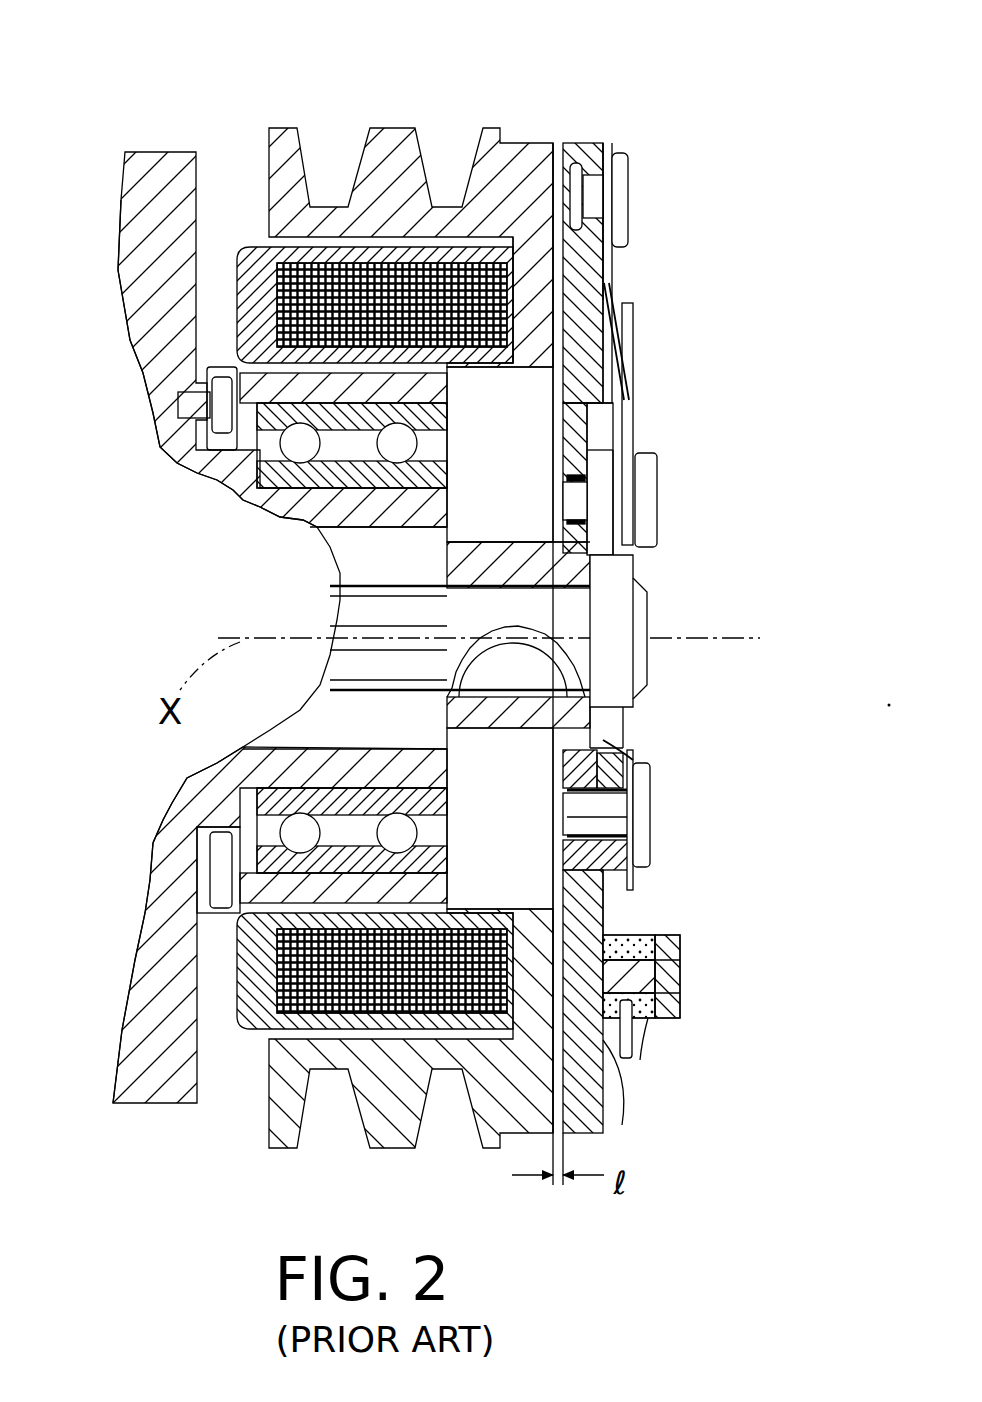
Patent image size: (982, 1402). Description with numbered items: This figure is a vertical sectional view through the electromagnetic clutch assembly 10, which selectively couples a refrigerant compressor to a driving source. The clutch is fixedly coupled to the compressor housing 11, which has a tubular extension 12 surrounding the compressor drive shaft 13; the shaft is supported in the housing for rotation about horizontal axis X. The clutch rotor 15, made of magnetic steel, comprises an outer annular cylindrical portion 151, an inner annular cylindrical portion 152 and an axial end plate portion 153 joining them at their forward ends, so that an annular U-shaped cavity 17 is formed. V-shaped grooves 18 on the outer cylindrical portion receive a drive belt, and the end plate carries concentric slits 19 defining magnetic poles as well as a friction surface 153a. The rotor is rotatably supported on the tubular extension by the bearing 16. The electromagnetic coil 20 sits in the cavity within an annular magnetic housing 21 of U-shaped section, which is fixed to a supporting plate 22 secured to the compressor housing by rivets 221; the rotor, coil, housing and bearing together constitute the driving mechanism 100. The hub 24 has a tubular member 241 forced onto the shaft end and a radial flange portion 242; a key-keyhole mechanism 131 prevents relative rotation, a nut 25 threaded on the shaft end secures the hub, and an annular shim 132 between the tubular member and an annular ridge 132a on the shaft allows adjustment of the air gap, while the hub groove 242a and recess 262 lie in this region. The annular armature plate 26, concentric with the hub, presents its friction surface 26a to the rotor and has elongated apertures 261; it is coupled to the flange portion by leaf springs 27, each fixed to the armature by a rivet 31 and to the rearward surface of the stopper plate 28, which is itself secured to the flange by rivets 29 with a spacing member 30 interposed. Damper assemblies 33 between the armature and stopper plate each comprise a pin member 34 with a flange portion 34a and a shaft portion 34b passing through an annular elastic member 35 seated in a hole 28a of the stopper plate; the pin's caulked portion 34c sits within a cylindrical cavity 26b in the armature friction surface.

The driving mechanism 100 is at (280, 92).
The electromagnetic clutch assembly 10 is at (385, 78).
The compressor housing 11 is at (168, 150).
The tubular extension 12 is at (323, 507).
The compressor drive shaft 13 is at (337, 643).
The key-keyhole mechanism 131 is at (455, 700).
The annular shim 132 is at (440, 570).
The annular ridge 132a is at (337, 600).
The clutch rotor 15 is at (510, 140).
The outer annular cylindrical portion 151 is at (452, 207).
The inner annular cylindrical portion 152 is at (483, 383).
The axial end plate portion 153 is at (535, 215).
The friction surface 153a is at (550, 225).
The bearing 16 is at (243, 507).
The annular U-shaped cavity 17 is at (485, 892).
The V-shaped grooves 18 is at (358, 143).
The concentric slits 19 is at (533, 927).
The electromagnetic coil 20 is at (277, 297).
The annular magnetic housing 21 is at (253, 250).
The supporting plate 22 is at (223, 280).
The rivets 221 is at (178, 402).
The hub 24 is at (555, 565).
The tubular member 241 is at (500, 565).
The flange portion 242 is at (633, 859).
The hub groove 242a is at (640, 453).
The nut 25 is at (617, 620).
The annular armature plate 26 is at (580, 150).
The friction surface 26a is at (562, 268).
The cylindrical cavity 26b is at (610, 937).
The elongated apertures 261 is at (640, 310).
The armature recess 262 is at (650, 475).
The leaf spring 27 is at (577, 300).
The stopper plate 28 is at (633, 357).
The hole 28a is at (647, 1012).
The rivets 29 is at (645, 495).
The spacing member 30 is at (612, 440).
The rivet 31 is at (630, 240).
The damper assembly 33 is at (692, 952).
The pin member 34 is at (690, 989).
The flange portion 34a is at (637, 982).
The shaft portion 34b is at (685, 1007).
The caulked portion 34c is at (636, 1101).
The annular elastic member 35 is at (640, 1002).